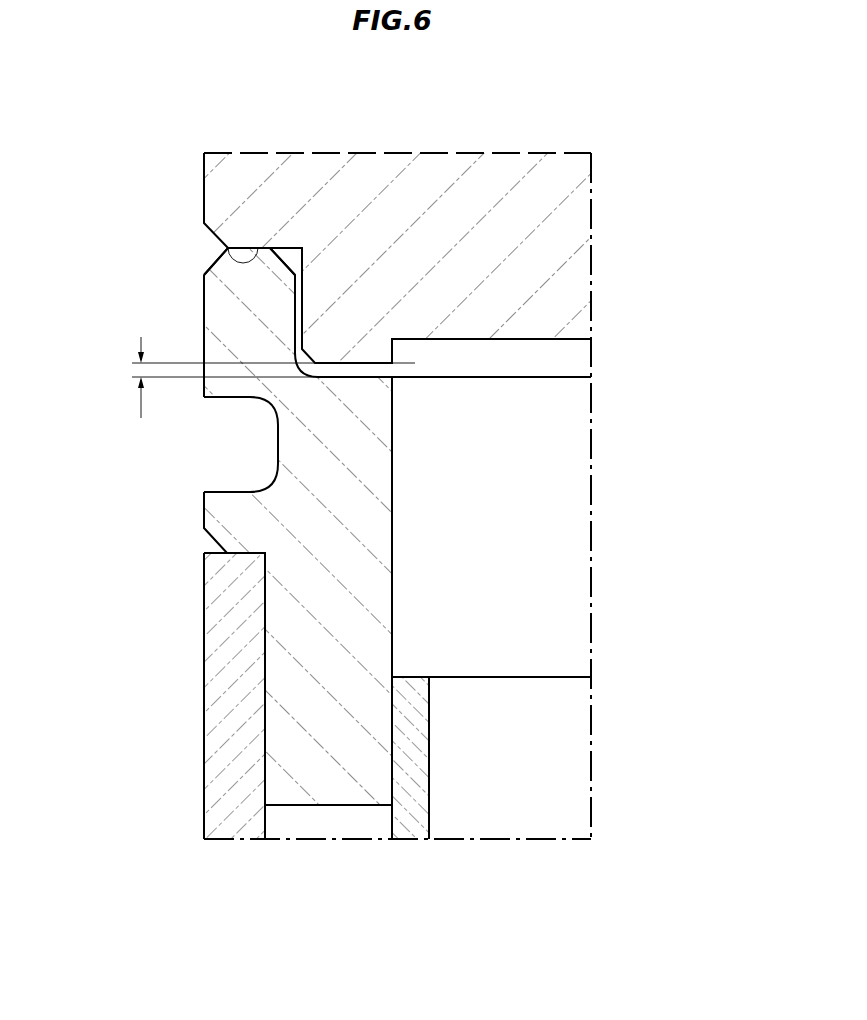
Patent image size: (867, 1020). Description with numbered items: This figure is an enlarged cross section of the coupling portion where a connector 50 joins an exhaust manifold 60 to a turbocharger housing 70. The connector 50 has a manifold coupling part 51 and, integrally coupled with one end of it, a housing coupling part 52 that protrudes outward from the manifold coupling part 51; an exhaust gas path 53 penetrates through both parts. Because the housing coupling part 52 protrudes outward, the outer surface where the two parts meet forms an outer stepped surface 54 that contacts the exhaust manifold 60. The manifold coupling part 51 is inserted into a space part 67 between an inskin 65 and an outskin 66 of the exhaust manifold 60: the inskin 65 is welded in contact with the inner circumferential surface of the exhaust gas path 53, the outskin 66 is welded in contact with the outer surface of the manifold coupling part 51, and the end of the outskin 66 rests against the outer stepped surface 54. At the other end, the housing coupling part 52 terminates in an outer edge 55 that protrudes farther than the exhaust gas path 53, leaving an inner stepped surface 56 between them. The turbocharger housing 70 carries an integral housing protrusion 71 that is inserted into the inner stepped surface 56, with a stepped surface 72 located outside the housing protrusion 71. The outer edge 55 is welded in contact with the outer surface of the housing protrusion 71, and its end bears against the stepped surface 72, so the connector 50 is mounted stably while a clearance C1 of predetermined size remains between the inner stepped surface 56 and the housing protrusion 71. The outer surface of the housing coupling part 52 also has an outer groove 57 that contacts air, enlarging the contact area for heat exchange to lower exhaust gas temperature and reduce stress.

The connector 50 is at (228, 513).
The manifold coupling part 51 is at (285, 643).
The housing coupling part 52 is at (203, 318).
The exhaust gas path 53 is at (562, 515).
The outer stepped surface 54 is at (243, 553).
The outer edge 55 is at (218, 281).
The inner stepped surface 56 is at (367, 380).
The outer groove 57 is at (217, 457).
The exhaust manifold 60 is at (330, 749).
The inskin 65 is at (410, 807).
The outskin 66 is at (218, 703).
The space part 67 is at (315, 825).
The turbocharger housing 70 is at (415, 173).
The housing protrusion 71 is at (373, 357).
The stepped surface 72 is at (228, 263).
The clearance C1 is at (258, 381).